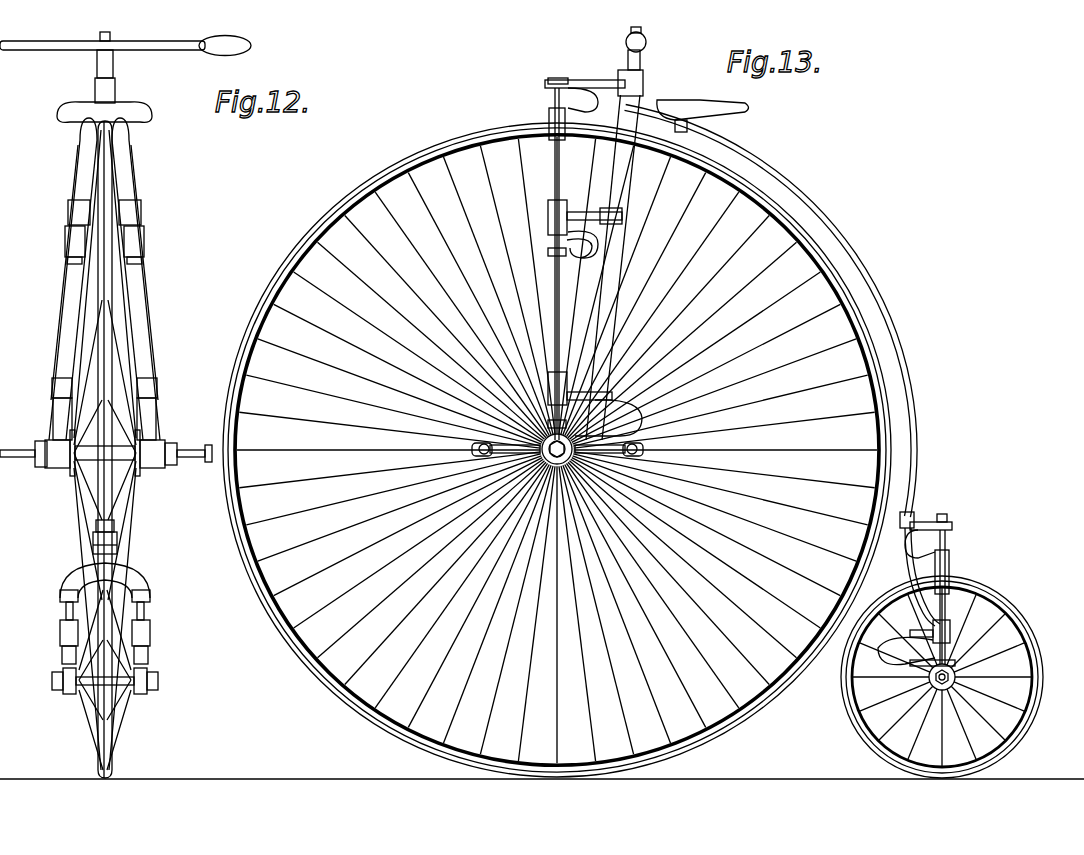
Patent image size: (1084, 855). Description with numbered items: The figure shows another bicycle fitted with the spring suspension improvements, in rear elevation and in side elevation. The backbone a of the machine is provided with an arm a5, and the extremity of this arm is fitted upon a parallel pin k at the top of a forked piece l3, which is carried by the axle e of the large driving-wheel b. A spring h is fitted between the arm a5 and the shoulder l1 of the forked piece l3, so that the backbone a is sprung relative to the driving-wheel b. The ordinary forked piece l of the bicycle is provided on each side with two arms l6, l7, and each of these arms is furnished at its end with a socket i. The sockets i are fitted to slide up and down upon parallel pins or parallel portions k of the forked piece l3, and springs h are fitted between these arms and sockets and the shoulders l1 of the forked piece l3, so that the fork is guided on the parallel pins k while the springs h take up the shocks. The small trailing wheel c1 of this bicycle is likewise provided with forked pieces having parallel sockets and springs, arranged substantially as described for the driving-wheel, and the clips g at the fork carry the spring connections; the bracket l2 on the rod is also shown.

In FIG. 12, the backbone a is at (100, 183).
In FIG. 13, the backbone a is at (767, 272).
In FIG. 13, the arm a5 is at (600, 75).
In FIG. 12, the driving-wheel b is at (95, 449).
In FIG. 13, the driving-wheel b is at (557, 450).
In FIG. 12, the trailing wheel c1 is at (105, 666).
In FIG. 13, the trailing wheel c1 is at (954, 645).
In FIG. 12, the axle e is at (106, 453).
In FIG. 13, the axle e is at (557, 461).
In FIG. 13, the clip g is at (589, 324).
In FIG. 12, the spring h is at (66, 240).
In FIG. 13, the spring h is at (605, 262).
In FIG. 13, the socket i is at (557, 304).
In FIG. 13, the parallel pin k is at (548, 96).
In FIG. 12, the forked piece l is at (80, 155).
In FIG. 13, the forked piece l is at (550, 270).
In FIG. 13, the shoulder l1 is at (549, 118).
In FIG. 13, the rod bracket l2 is at (579, 364).
In FIG. 13, the forked piece l3 is at (555, 140).
In FIG. 12, the arm l6 is at (68, 208).
In FIG. 13, the arm l6 is at (594, 206).
In FIG. 12, the arm l7 is at (54, 385).